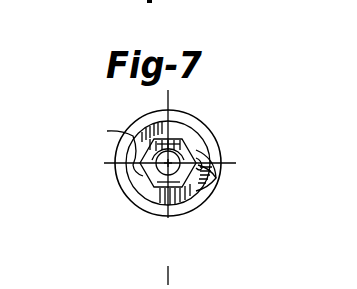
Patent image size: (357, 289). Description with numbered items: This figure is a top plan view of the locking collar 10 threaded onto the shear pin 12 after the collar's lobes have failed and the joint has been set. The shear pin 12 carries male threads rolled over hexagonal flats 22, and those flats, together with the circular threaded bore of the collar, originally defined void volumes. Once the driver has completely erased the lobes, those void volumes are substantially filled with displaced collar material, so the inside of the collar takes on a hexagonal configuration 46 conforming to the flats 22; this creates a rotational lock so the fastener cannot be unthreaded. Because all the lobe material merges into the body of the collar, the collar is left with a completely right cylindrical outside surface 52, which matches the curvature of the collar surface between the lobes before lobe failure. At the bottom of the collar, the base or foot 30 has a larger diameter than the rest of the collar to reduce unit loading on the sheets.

The locking collar 10 is at (131, 204).
The shear pin 12 is at (186, 149).
The hexagonal flats 22 is at (111, 147).
The base or foot 30 is at (203, 201).
The hexagonal configuration of the collar inside 46 is at (192, 160).
The right cylindrical outside surface 52 is at (222, 138).